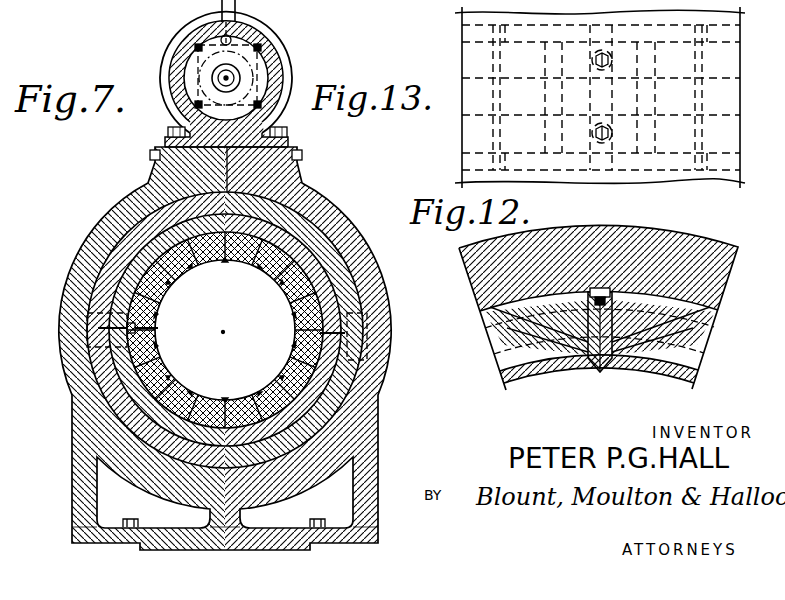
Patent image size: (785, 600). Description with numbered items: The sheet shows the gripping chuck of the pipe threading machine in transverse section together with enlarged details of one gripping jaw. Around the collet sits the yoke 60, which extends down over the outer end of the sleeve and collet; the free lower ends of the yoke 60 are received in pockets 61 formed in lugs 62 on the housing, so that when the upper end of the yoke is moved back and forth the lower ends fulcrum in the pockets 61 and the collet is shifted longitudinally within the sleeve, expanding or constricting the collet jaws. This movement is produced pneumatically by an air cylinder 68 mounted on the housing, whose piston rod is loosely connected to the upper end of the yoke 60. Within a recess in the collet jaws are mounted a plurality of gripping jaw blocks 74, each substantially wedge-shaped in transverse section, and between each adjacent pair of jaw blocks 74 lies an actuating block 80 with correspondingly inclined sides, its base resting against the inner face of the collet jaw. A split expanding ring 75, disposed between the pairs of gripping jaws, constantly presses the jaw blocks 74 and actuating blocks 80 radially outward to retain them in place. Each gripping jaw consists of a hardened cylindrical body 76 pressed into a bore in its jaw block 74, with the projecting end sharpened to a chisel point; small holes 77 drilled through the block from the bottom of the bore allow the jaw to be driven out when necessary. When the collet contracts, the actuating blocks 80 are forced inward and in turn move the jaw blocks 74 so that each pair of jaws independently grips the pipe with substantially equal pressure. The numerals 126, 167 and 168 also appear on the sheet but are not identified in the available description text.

In FIG. 7, the yoke 60 is at (362, 278).
In FIG. 7, the pockets 61 is at (373, 407).
In FIG. 7, the lugs 62 is at (375, 427).
In FIG. 7, the air cylinder 68 is at (290, 62).
In FIG. 7, the gripping jaw blocks 74 is at (290, 297).
In FIG. 12, the gripping jaw blocks 74 is at (613, 342).
In FIG. 7, the expanding ring 75 is at (212, 260).
In FIG. 12, the expanding ring 75 is at (637, 360).
In FIG. 7, the cylindrical body 76 is at (225, 402).
In FIG. 12, the cylindrical body 76 is at (577, 338).
In FIG. 12, the small holes 77 is at (603, 290).
In FIG. 7, the actuating blocks 80 is at (168, 292).
In FIG. 12, the actuating blocks 80 is at (550, 327).
In FIG. 13, the connecting member 126 is at (408, 9).
In FIG. 13, the frame plate 167 is at (600, 94).
In FIG. 7, the shaft 168 is at (248, 46).